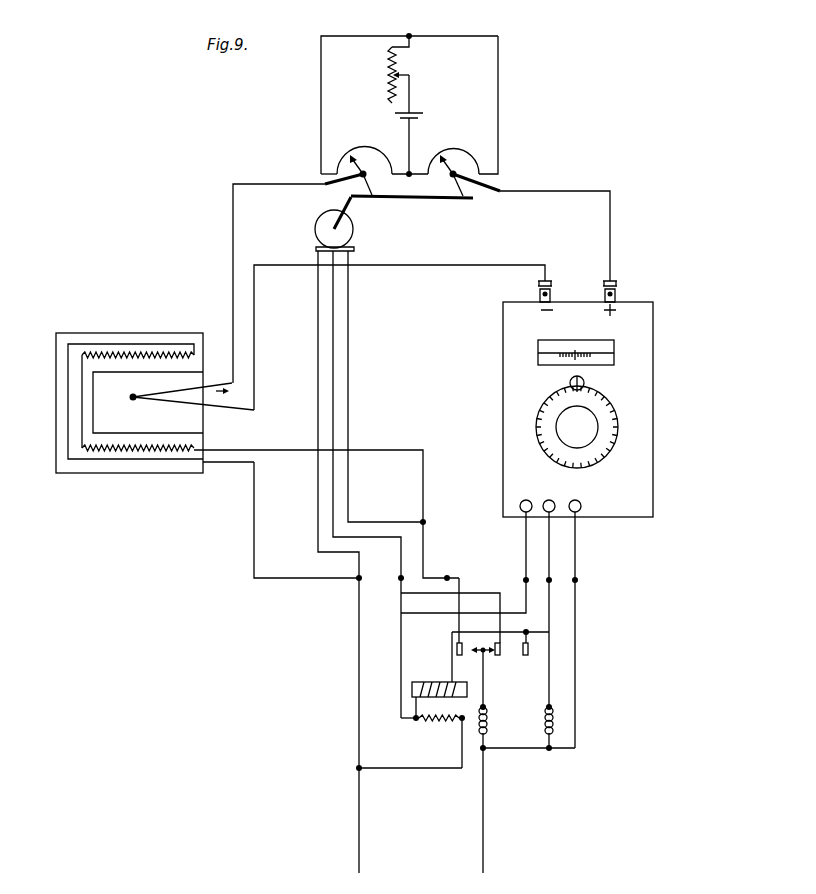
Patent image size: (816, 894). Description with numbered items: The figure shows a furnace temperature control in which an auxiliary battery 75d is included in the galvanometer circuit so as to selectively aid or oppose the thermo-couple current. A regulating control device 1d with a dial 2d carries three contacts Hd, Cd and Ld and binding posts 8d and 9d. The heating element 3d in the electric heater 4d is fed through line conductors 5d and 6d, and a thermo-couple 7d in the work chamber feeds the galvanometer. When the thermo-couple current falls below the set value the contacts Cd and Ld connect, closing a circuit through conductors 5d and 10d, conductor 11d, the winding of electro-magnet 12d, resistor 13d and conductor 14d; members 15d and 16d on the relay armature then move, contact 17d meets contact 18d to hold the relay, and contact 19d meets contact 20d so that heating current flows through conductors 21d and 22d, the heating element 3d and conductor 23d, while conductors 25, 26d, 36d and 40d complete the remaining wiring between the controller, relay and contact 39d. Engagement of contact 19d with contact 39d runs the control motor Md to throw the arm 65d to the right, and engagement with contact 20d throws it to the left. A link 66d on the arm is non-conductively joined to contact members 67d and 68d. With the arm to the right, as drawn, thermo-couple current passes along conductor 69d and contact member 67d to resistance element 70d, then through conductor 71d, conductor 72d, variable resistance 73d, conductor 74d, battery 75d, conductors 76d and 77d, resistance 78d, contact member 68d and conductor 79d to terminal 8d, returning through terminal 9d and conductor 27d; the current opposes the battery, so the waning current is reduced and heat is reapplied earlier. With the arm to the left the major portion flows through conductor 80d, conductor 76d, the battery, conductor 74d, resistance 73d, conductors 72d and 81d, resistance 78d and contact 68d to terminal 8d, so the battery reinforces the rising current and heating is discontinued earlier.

The control device 1d is at (667, 429).
The dial 2d is at (607, 450).
The heating element 3d is at (68, 428).
The electric heater 4d is at (56, 388).
The line conductor 5d is at (484, 838).
The line conductor 6d is at (357, 828).
The thermo-couple 7d is at (147, 408).
The terminal 8d is at (613, 280).
The terminal 9d is at (548, 284).
The conductor 10d is at (576, 727).
The conductor 11d is at (450, 638).
The electro-magnet 12d is at (405, 694).
The resistor 13d is at (440, 722).
The conductor 14d is at (408, 770).
The member 15d is at (486, 697).
The member 16d is at (551, 697).
The contact 17d is at (541, 654).
The contact 18d is at (530, 645).
The contact 19d is at (487, 648).
The contact 20d is at (457, 649).
The conductor 21d is at (480, 565).
The conductor 22d is at (284, 448).
The conductor 23d is at (308, 579).
The conductor 25 is at (550, 560).
The conductor 26d is at (523, 541).
The conductor 27d is at (428, 268).
The conductor 36d is at (330, 520).
The contact 39d is at (497, 656).
The conductor 40d is at (417, 597).
The arm 65d is at (338, 213).
The link 66d is at (440, 200).
The contact member 67d is at (370, 200).
The contact member 68d is at (461, 200).
The conductor 69d is at (232, 238).
The resistance element 70d is at (337, 167).
The conductor 71d is at (322, 108).
The conductor 72d is at (399, 36).
The variable resistance 73d is at (385, 65).
The conductor 74d is at (413, 82).
The battery 75d is at (411, 113).
The conductor 76d is at (412, 140).
The conductor 77d is at (418, 176).
The resistance 78d is at (482, 165).
The conductor 79d is at (610, 207).
The conductor 80d is at (392, 158).
The conductor 81d is at (498, 65).
The contact Hd is at (523, 497).
The contact Cd is at (549, 497).
The contact Ld is at (574, 497).
The control motor Md is at (320, 232).